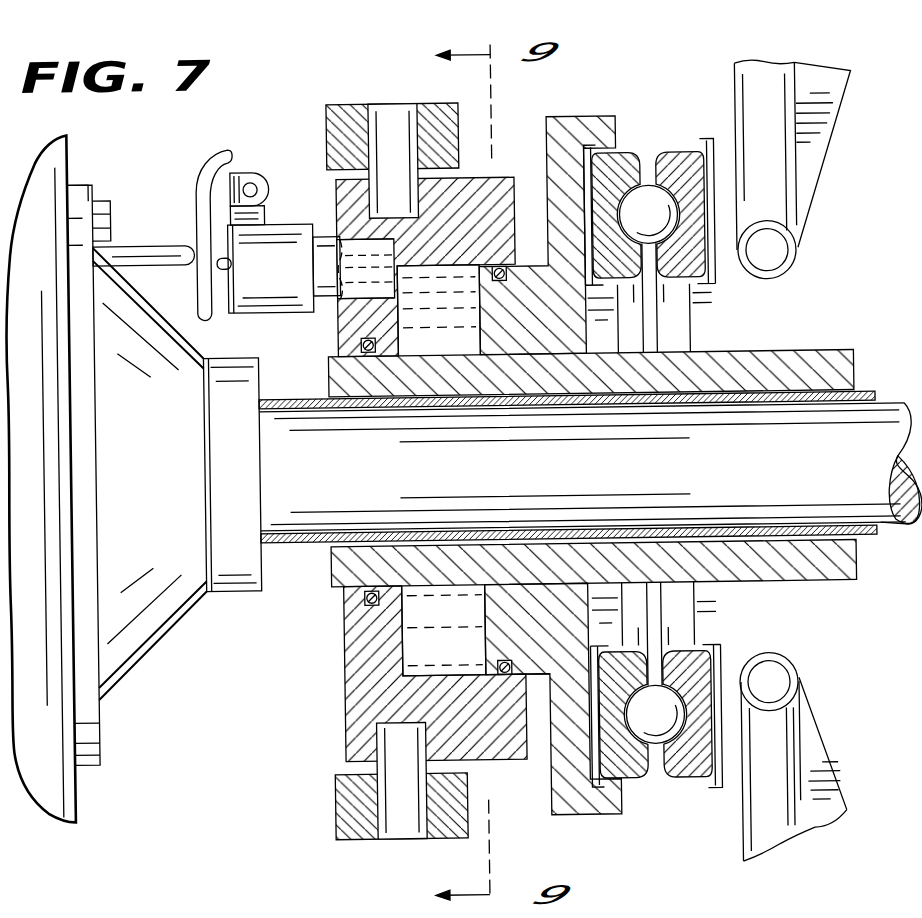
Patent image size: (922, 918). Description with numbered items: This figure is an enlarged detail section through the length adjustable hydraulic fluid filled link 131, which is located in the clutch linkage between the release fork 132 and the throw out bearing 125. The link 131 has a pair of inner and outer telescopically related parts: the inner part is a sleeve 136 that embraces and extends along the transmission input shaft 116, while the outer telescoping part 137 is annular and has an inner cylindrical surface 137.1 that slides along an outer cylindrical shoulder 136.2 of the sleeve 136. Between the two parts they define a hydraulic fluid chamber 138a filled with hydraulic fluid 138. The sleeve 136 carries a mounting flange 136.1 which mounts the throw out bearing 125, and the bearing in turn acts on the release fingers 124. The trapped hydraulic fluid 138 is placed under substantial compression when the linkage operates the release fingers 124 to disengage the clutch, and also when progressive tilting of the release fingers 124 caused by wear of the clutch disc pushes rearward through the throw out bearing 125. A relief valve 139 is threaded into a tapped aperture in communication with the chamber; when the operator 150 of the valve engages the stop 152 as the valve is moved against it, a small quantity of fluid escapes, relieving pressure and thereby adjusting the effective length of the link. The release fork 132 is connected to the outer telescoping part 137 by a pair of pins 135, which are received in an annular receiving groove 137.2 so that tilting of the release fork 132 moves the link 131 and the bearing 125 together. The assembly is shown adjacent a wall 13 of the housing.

The wall 13 is at (58, 783).
The transmission input shaft 116 is at (800, 461).
The release fingers 124 is at (805, 230).
The throw out bearing 125 is at (722, 283).
The length adjustable hydraulic fluid filled link 131 is at (511, 154).
The release fork 132 is at (345, 125).
The pins 135 is at (398, 103).
The sleeve 136 is at (338, 572).
The mounting flange 136.1 is at (600, 138).
The outer cylindrical shoulder 136.2 is at (541, 676).
The outer telescoping part 137 is at (350, 697).
The inner cylindrical surface 137.1 is at (536, 672).
The annular receiving groove 137.2 is at (388, 742).
The hydraulic fluid 138 is at (413, 640).
The hydraulic fluid chamber 138a is at (458, 345).
The relief valve 139 is at (297, 298).
The operator 150 is at (200, 197).
The stop 152 is at (148, 242).